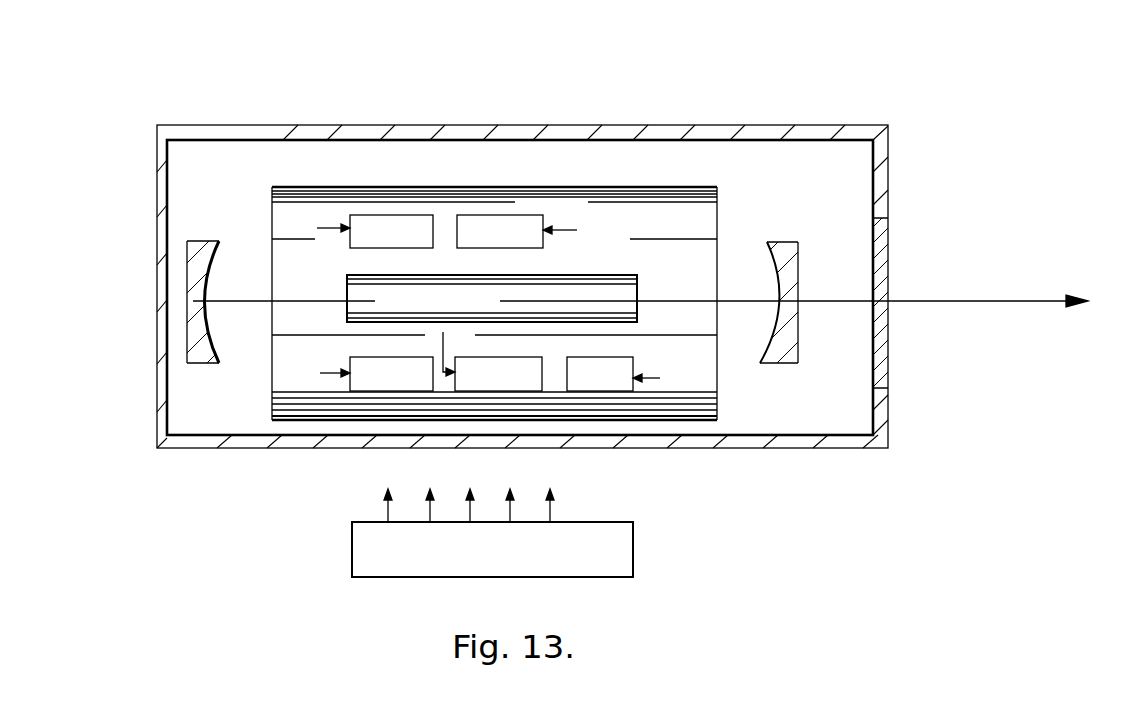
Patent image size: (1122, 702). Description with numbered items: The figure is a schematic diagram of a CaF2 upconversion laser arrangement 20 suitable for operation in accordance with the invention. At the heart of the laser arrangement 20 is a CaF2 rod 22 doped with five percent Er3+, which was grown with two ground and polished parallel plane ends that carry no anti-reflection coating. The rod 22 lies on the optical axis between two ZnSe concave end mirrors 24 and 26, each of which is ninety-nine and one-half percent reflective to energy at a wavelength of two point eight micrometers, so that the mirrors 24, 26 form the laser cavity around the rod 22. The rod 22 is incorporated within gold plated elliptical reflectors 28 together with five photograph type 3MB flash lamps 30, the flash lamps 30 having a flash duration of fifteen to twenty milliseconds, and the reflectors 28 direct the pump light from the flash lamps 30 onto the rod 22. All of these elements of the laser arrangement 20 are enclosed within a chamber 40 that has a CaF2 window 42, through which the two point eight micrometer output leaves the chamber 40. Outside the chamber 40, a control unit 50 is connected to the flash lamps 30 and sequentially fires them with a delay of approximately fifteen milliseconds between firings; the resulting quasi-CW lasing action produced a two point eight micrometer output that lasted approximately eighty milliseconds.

The laser arrangement 20 is at (627, 69).
The CaF2 (Er3+) rod 22 is at (637, 275).
The ZnSe concave end mirror 24 is at (203, 296).
The ZnSe concave end mirror 26 is at (797, 242).
The gold plated elliptical reflectors 28 is at (342, 187).
The flash lamps 30 is at (541, 215).
The chamber 40 is at (304, 125).
The CaF2 window 42 is at (880, 257).
The control unit 50 is at (633, 522).